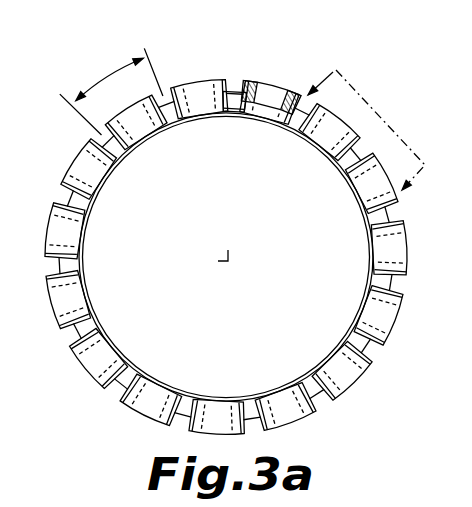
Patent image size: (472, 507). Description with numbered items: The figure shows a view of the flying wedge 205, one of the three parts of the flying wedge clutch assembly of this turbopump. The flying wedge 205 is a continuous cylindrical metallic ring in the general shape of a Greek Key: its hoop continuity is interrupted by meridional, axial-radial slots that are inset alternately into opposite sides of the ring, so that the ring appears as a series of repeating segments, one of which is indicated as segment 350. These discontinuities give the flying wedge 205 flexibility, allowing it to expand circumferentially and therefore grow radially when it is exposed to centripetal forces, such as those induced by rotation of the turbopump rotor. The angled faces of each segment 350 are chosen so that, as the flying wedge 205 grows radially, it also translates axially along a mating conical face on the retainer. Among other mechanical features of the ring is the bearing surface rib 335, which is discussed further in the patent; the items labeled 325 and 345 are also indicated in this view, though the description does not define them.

The flying wedge 205 is at (256, 223).
The spacer insert 325 is at (230, 90).
The bearing surface rib 335 is at (471, 33).
The segment pair 345 is at (390, 124).
The segment 350 is at (101, 82).